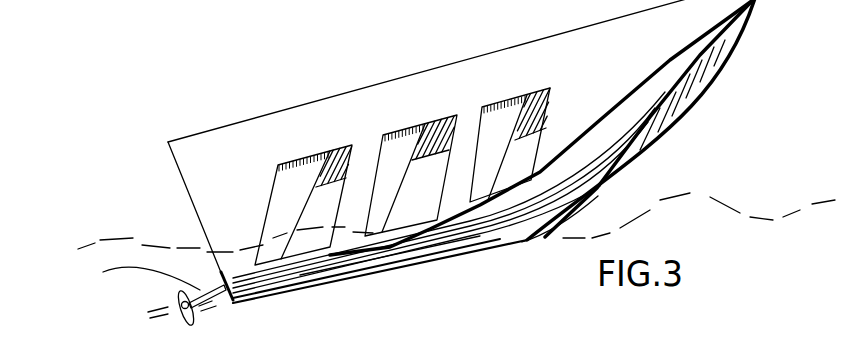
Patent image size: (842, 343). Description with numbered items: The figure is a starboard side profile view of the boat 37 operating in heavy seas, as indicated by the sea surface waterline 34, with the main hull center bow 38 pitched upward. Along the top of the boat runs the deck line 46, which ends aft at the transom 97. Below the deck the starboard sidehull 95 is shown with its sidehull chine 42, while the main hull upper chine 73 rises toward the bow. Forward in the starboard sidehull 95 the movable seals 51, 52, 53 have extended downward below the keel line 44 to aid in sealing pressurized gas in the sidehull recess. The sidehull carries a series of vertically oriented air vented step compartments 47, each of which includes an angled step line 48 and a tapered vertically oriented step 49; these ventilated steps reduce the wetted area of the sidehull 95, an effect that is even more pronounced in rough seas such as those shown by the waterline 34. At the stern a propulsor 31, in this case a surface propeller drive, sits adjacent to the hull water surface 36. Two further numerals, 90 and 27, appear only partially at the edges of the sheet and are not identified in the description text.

The propulsor 31 is at (138, 274).
The sea surface waterline 34 is at (130, 240).
The hull water surface 36 is at (224, 302).
The boat 37 is at (498, 88).
The main hull center bow 38 is at (722, 70).
The sidehull chine 42 is at (588, 170).
The keel line 44 is at (343, 272).
The deck line 46 is at (218, 128).
The vertically oriented air vented step compartments 47 is at (307, 157).
The angled step line 48 is at (305, 212).
The tapered vertically oriented step 49 is at (302, 190).
The forward movable seal 51 is at (592, 221).
The forward movable seal 52 is at (530, 240).
The forward movable seal 53 is at (480, 238).
The main hull upper chine 73 is at (637, 84).
The mast 90 is at (489, 6).
The starboard sidehull 95 is at (641, 135).
The transom 97 is at (172, 158).
The hull 27 is at (402, 338).